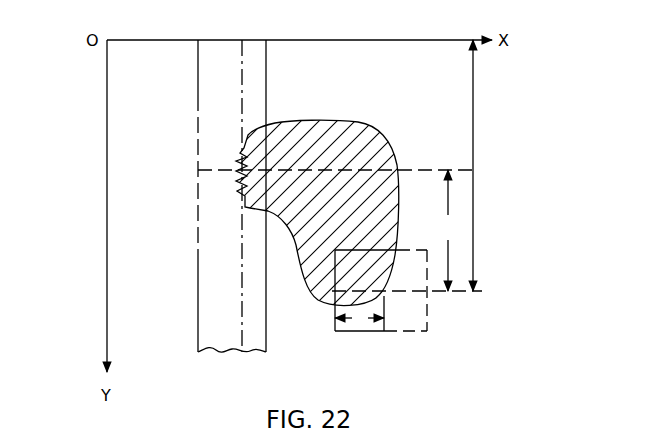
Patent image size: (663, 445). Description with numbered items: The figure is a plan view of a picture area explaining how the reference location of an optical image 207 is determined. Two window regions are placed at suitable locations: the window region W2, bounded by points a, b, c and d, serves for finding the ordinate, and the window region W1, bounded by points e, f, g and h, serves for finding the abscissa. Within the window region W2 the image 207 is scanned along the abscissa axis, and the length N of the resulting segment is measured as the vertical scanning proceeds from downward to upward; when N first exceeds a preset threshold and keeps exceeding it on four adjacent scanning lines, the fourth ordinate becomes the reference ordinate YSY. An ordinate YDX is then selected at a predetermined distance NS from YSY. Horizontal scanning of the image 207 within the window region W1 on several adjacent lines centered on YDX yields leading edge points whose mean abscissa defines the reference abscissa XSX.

The image 207 is at (374, 133).
The window region W1 is at (222, 341).
The window region W2 is at (397, 323).
The length of a segment N is at (359, 313).
The predetermined distance NS is at (447, 230).
The abscissa of the reference location XSX is at (242, 185).
The ordinate YDX is at (356, 171).
The reference ordinate YSY is at (425, 291).